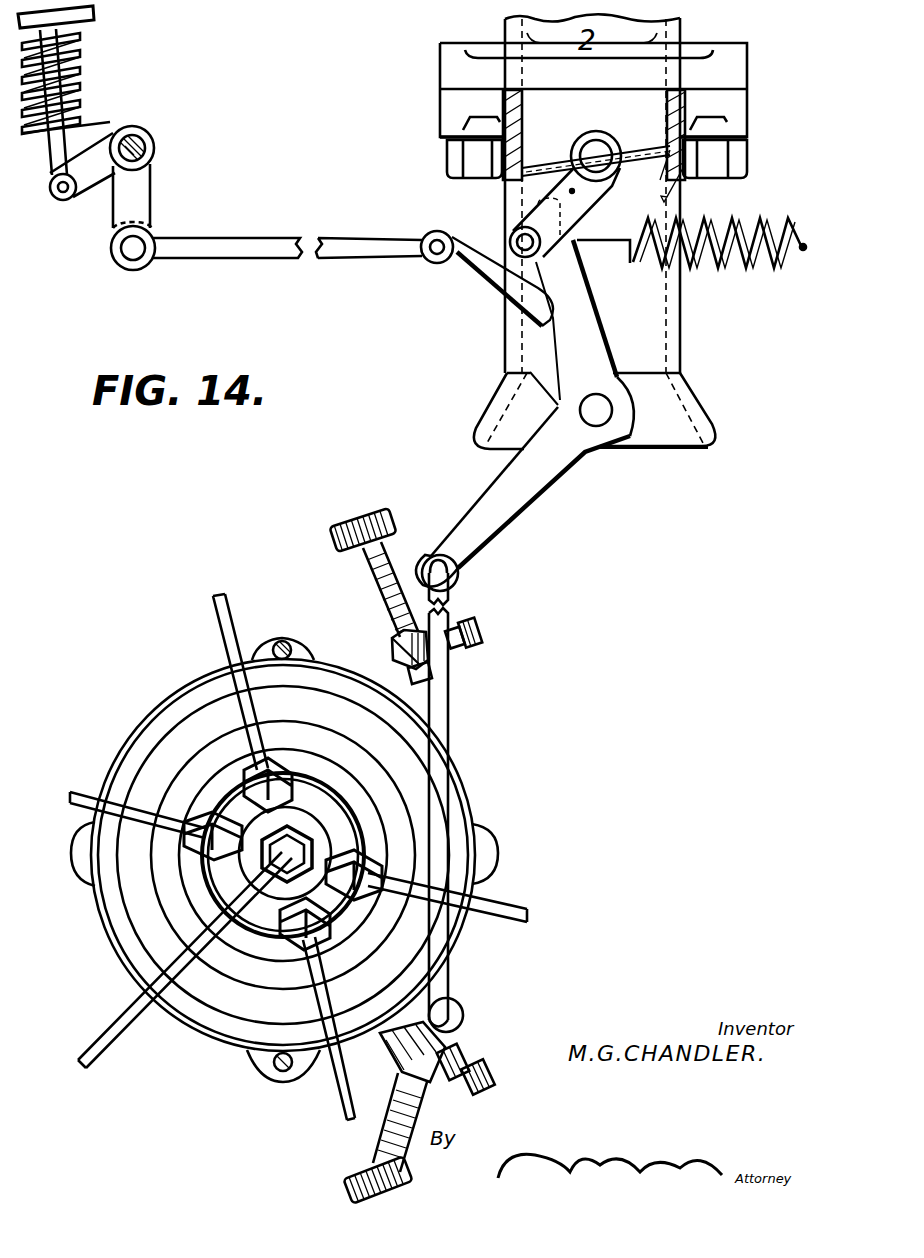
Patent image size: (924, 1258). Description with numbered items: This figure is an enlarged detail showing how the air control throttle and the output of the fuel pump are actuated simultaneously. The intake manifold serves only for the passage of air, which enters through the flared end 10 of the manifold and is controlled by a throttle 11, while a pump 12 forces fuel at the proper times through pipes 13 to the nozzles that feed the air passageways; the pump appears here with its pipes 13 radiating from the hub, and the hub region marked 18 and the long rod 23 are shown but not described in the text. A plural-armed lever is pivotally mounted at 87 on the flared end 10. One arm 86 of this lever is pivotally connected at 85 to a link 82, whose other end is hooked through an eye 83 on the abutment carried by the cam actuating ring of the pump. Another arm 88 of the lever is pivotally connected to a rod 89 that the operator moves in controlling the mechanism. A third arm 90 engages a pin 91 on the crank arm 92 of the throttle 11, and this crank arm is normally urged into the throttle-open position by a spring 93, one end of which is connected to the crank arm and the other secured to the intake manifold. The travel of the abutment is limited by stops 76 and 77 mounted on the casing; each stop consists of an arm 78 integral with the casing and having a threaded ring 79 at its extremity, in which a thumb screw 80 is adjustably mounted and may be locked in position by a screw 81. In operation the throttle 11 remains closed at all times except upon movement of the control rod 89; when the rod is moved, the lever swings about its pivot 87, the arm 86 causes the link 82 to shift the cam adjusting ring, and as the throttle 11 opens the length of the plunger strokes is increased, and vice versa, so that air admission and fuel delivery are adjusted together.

The flared end 10 is at (705, 416).
The throttle 11 is at (644, 151).
The pump 12 is at (182, 708).
The pipes 13 is at (220, 628).
The hub 18 is at (340, 826).
The rod 23 is at (130, 1018).
The stop 76 is at (395, 636).
The stop 77 is at (468, 1056).
The arm 78 is at (420, 680).
The threaded ring 79 is at (390, 650).
The thumb screw 80 is at (372, 560).
The screw 81 is at (480, 630).
The link 82 is at (440, 722).
The eye 83 is at (462, 1014).
The pivotal connection 85 is at (460, 573).
The arm 86 is at (540, 480).
The pivot 87 is at (602, 414).
The arm 88 is at (488, 301).
The rod 89 is at (268, 234).
The arm 90 is at (567, 284).
The pin 91 is at (513, 238).
The crank arm 92 is at (572, 191).
The spring 93 is at (715, 253).